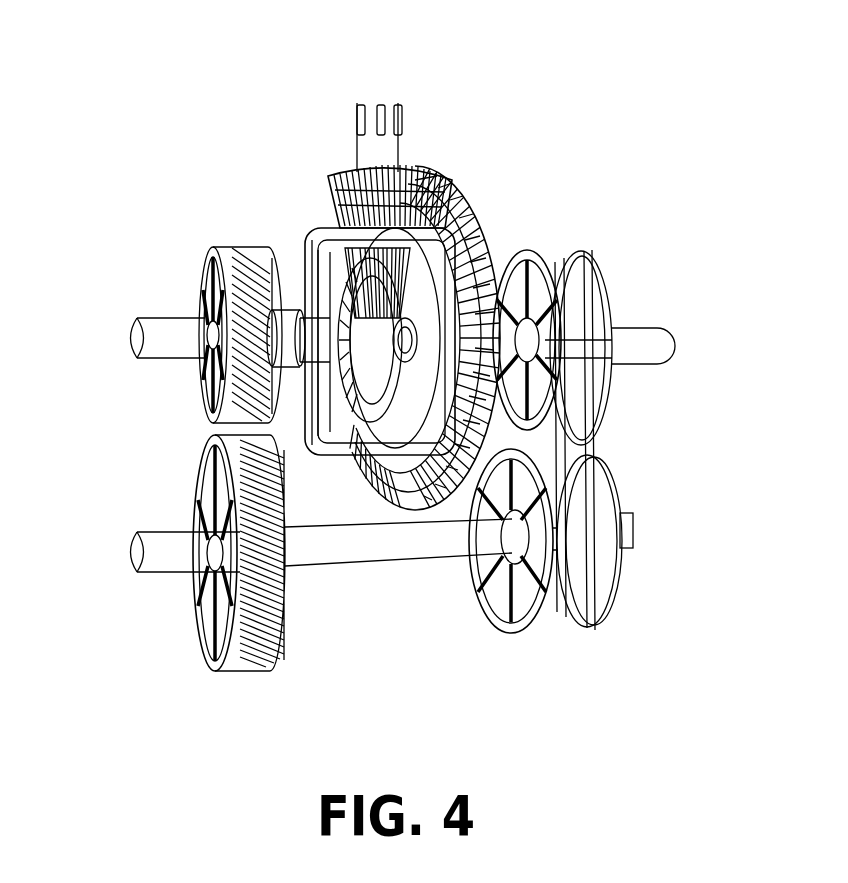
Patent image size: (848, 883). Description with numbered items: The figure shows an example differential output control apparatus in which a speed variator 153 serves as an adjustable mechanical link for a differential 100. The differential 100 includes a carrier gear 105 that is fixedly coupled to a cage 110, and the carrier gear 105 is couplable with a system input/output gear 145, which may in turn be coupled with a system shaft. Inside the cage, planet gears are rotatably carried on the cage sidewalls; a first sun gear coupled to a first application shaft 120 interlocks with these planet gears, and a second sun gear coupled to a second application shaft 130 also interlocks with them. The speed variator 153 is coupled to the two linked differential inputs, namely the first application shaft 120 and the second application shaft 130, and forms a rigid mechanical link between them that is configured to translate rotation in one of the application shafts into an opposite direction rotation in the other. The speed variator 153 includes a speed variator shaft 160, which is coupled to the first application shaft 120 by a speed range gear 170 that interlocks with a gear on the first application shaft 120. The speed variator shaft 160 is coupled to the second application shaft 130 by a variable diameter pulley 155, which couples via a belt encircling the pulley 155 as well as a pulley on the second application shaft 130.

The differential 100 is at (563, 73).
The carrier gear 105 is at (455, 186).
The cage 110 is at (308, 232).
The first application shaft 120 is at (182, 332).
The second application shaft 130 is at (628, 337).
The system input/output gear 145 is at (333, 163).
The speed variator 153 is at (613, 678).
The variable diameter pulley 155 is at (603, 498).
The speed variator shaft 160 is at (400, 532).
The speed range gear 170 is at (200, 645).